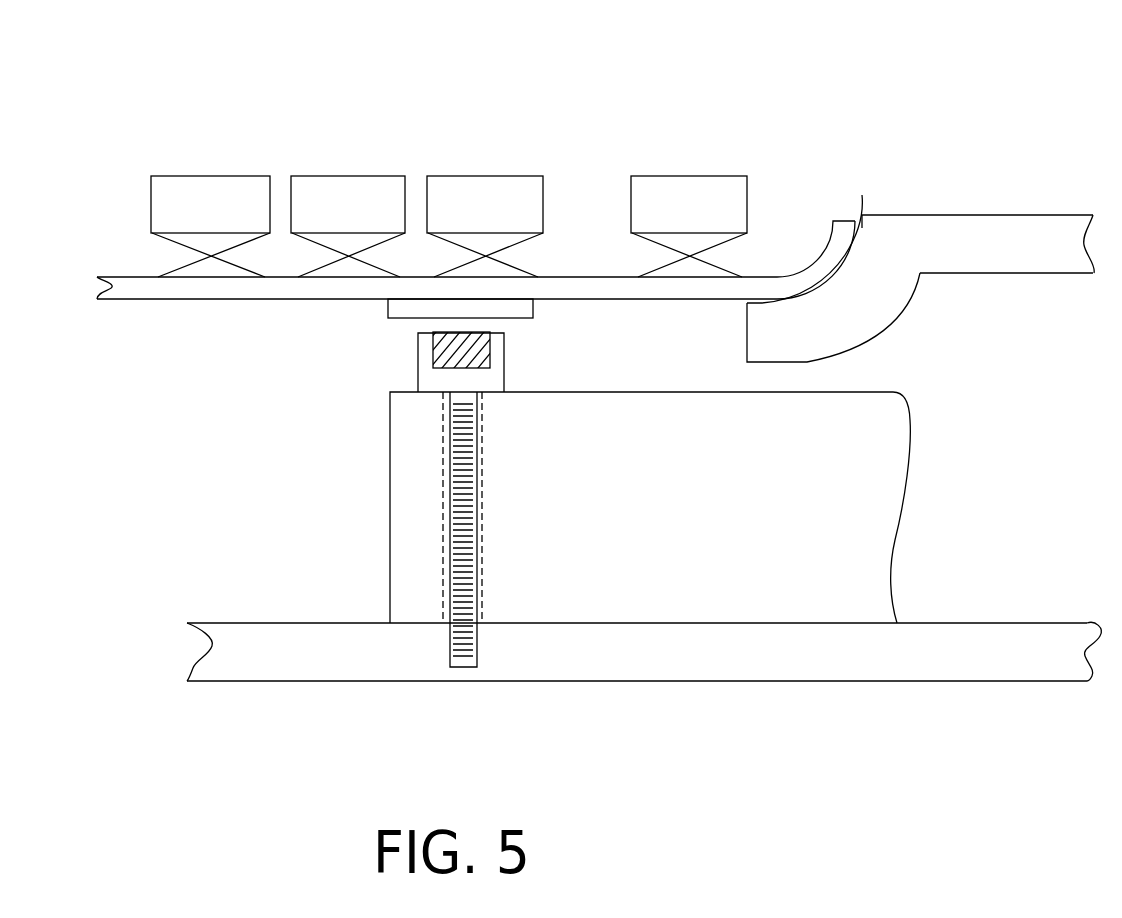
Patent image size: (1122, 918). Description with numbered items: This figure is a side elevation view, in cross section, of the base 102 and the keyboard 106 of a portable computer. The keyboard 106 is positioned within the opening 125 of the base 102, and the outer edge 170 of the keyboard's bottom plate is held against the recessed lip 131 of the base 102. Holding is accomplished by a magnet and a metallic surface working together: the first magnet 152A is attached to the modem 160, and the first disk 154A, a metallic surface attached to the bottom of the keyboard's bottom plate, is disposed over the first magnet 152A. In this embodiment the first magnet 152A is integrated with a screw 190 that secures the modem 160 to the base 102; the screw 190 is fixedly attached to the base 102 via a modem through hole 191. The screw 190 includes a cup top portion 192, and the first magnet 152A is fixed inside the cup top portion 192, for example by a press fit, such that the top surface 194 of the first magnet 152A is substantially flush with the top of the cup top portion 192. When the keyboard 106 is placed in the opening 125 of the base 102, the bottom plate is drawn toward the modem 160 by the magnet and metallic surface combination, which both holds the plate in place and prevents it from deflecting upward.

The base 102 is at (1033, 247).
The keyboard 106 is at (347, 108).
The opening 125 is at (273, 320).
The recessed lip 131 is at (793, 333).
The first magnet 152A is at (433, 347).
The first disk 154A is at (537, 307).
The modem 160 is at (850, 457).
The outer edge 170 is at (862, 195).
The screw 190 is at (443, 533).
The modem through hole 191 is at (482, 537).
The cup top portion 192 is at (503, 362).
The top surface 194 is at (445, 333).